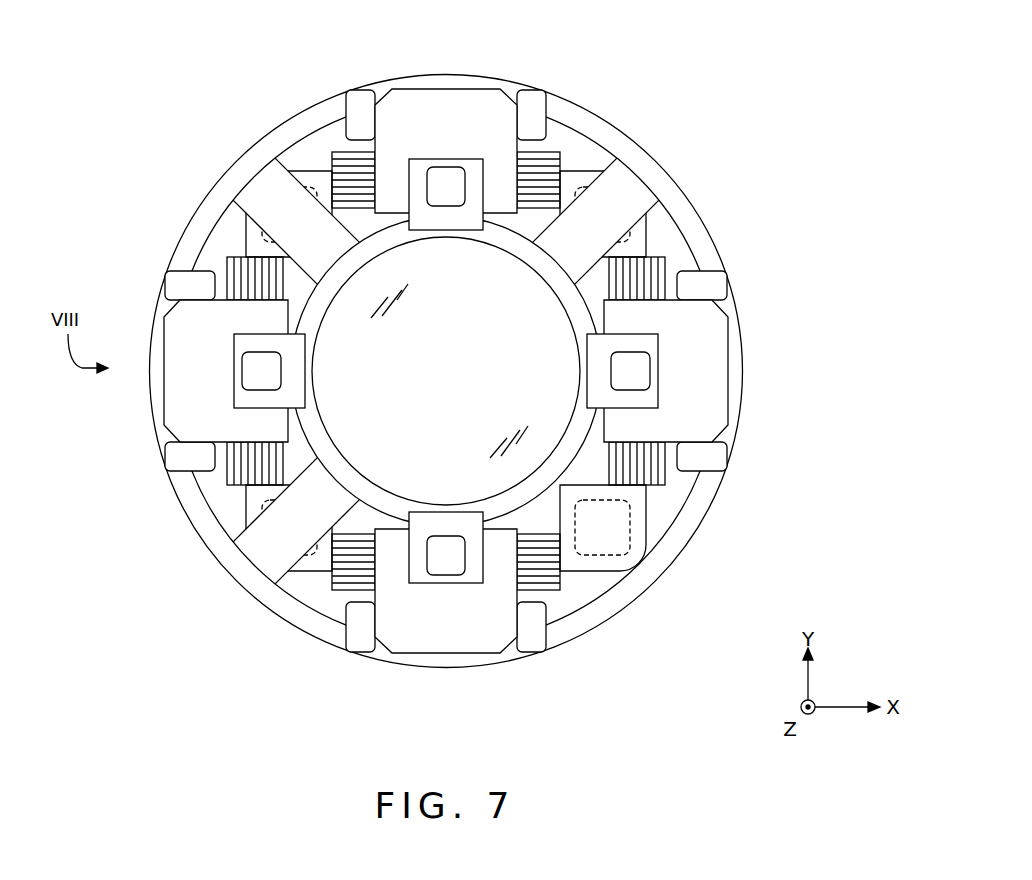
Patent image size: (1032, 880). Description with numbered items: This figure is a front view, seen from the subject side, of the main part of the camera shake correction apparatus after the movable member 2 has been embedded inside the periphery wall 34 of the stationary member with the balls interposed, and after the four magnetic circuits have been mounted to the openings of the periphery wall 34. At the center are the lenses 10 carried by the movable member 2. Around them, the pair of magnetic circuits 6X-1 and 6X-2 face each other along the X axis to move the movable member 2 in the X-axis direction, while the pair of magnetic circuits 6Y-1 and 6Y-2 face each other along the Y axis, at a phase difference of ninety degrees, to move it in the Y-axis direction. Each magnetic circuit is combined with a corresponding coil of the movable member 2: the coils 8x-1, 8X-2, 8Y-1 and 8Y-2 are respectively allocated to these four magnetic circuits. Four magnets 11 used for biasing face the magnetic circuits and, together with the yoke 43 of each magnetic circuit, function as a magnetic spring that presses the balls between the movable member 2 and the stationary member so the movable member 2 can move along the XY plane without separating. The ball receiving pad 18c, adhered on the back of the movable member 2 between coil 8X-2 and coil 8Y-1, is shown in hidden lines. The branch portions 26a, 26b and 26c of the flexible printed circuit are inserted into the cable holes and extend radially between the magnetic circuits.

The movable member 2 is at (603, 572).
The lenses 10 is at (365, 433).
The magnets used for biasing 11 is at (441, 183).
The ball receiving pad 18c is at (632, 530).
The branch portion 26a is at (262, 557).
The branch portion 26b is at (628, 188).
The branch portion 26c is at (262, 186).
The periphery wall 34 is at (648, 591).
The yoke 43 is at (530, 102).
The magnetic circuit 6X-1 is at (186, 410).
The magnetic circuit 6X-2 is at (716, 341).
The magnetic circuit 6Y-1 is at (423, 637).
The magnetic circuit 6Y-2 is at (450, 108).
The coil 8x-1 is at (229, 254).
The coil 8X-2 is at (684, 238).
The coil 8Y-1 is at (553, 606).
The coil 8Y-2 is at (585, 118).